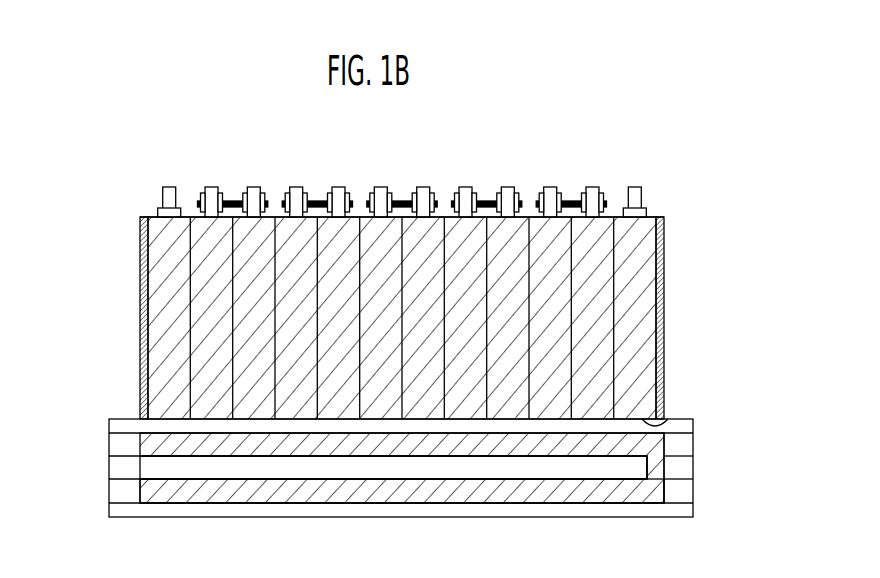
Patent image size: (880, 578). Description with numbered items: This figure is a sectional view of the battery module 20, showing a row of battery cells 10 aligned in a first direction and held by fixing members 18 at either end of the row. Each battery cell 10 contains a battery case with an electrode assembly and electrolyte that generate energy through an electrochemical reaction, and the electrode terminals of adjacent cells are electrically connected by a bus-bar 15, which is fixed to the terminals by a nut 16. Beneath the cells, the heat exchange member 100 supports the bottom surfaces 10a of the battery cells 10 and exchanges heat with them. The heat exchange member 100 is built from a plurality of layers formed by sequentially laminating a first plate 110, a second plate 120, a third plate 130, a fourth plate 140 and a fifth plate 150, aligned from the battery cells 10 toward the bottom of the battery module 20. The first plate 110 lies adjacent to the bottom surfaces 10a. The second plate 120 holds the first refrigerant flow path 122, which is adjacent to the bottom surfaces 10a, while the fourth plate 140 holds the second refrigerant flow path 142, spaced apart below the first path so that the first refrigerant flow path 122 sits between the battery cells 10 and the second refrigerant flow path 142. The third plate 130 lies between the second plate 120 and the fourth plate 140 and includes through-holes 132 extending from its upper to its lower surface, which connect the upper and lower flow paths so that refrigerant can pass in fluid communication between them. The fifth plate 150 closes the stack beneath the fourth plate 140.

The heat exchange member 100 is at (98, 425).
The battery module 20 is at (518, 148).
The battery cell 10 is at (643, 318).
The bottom surface 10a is at (668, 418).
The fixing member 18 is at (140, 279).
The bus-bar 15 is at (233, 200).
The nut 16 is at (209, 189).
The first plate 110 is at (686, 425).
The second plate 120 is at (686, 445).
The first refrigerant flow path 122 is at (348, 444).
The third plate 130 is at (686, 465).
The through-hole 132 is at (648, 467).
The fourth plate 140 is at (686, 488).
The second refrigerant flow path 142 is at (400, 490).
The fifth plate 150 is at (686, 510).